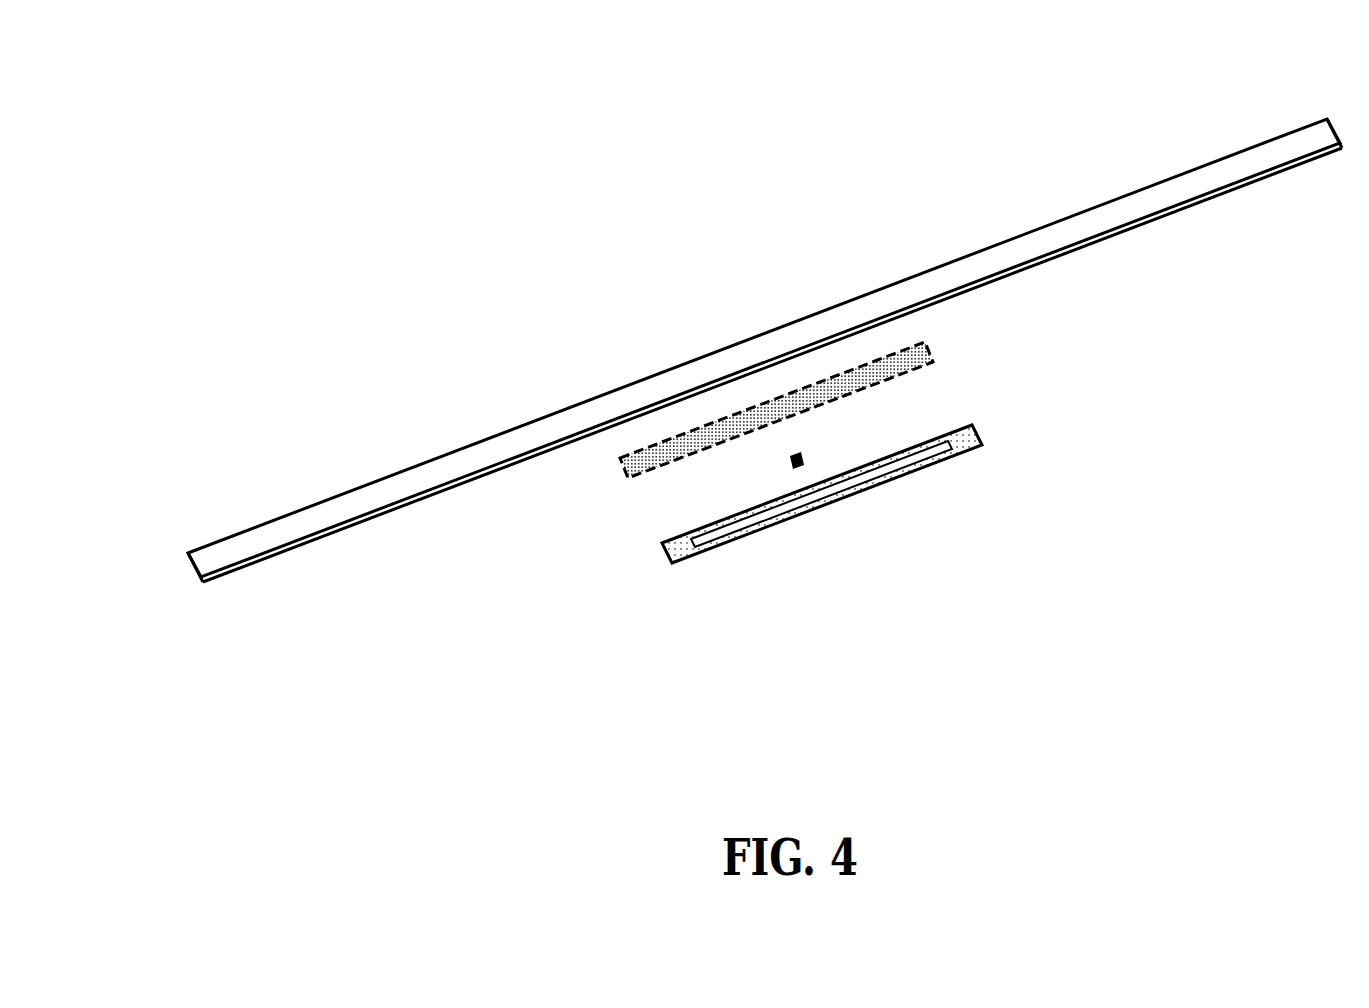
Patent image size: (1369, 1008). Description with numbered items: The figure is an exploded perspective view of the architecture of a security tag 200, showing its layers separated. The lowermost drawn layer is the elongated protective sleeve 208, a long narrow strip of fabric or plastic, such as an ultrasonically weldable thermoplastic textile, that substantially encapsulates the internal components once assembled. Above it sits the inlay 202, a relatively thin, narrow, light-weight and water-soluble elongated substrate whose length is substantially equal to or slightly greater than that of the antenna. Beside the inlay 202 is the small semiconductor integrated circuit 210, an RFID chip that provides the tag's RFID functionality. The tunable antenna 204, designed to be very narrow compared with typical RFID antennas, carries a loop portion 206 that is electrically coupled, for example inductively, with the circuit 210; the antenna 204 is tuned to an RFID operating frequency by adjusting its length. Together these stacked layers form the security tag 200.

The security tag 200 is at (189, 98).
The inlay 202 is at (963, 345).
The tunable antenna 204 is at (946, 489).
The loop portion 206 is at (860, 507).
The elongated protective sleeve 208 is at (355, 476).
The semiconductor integrated circuit 210 is at (772, 470).